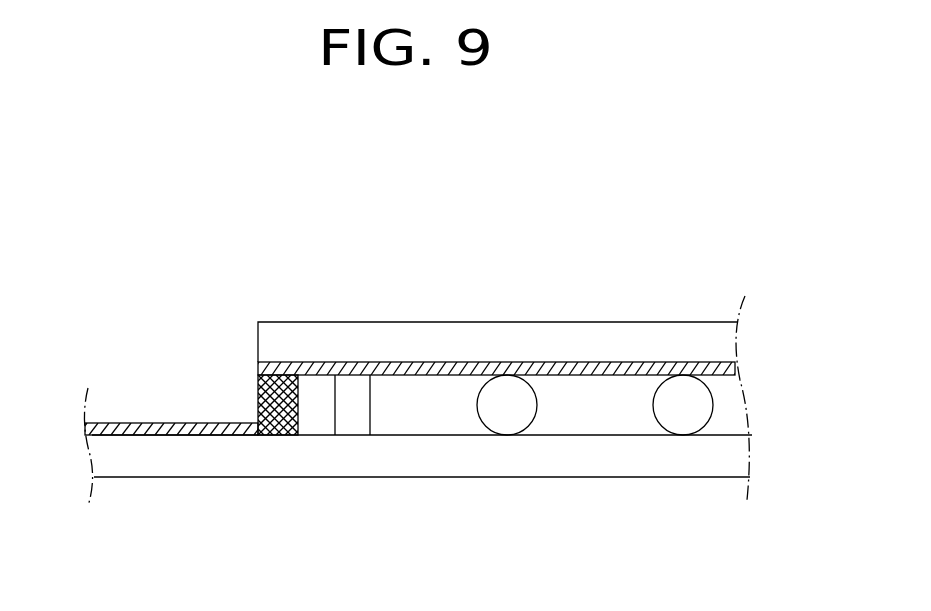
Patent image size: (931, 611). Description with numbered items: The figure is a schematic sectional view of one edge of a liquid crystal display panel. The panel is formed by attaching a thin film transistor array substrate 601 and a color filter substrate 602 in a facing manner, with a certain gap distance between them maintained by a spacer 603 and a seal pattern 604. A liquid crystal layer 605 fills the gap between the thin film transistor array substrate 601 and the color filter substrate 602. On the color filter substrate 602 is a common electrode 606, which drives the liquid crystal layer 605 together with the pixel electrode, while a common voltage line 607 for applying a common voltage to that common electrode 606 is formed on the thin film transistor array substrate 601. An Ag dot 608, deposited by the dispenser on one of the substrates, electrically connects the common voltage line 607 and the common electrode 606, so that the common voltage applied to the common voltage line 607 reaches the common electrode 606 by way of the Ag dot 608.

The thin film transistor array substrate 601 is at (613, 457).
The color filter substrate 602 is at (305, 343).
The spacer 603 is at (682, 415).
The seal pattern 604 is at (352, 417).
The liquid crystal layer 605 is at (580, 407).
The common electrode 606 is at (262, 368).
The common voltage line 607 is at (135, 430).
The Ag dot 608 is at (268, 400).